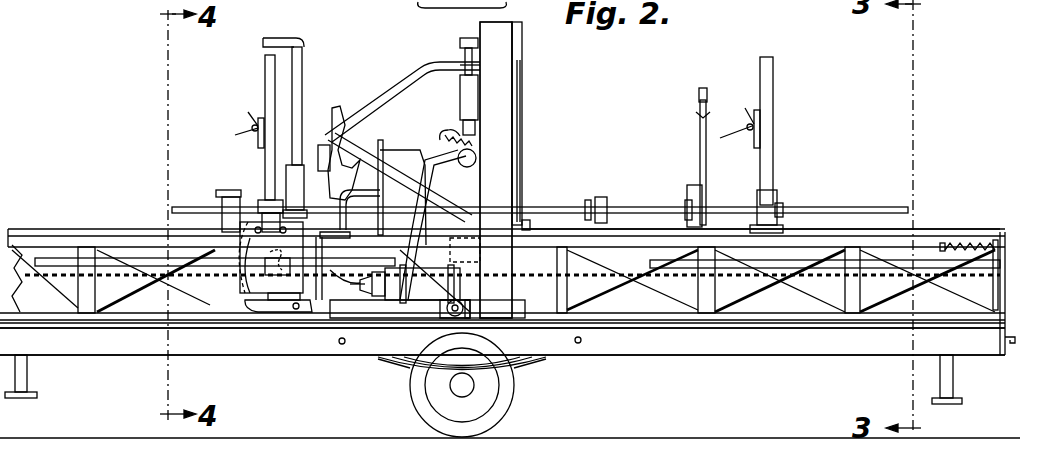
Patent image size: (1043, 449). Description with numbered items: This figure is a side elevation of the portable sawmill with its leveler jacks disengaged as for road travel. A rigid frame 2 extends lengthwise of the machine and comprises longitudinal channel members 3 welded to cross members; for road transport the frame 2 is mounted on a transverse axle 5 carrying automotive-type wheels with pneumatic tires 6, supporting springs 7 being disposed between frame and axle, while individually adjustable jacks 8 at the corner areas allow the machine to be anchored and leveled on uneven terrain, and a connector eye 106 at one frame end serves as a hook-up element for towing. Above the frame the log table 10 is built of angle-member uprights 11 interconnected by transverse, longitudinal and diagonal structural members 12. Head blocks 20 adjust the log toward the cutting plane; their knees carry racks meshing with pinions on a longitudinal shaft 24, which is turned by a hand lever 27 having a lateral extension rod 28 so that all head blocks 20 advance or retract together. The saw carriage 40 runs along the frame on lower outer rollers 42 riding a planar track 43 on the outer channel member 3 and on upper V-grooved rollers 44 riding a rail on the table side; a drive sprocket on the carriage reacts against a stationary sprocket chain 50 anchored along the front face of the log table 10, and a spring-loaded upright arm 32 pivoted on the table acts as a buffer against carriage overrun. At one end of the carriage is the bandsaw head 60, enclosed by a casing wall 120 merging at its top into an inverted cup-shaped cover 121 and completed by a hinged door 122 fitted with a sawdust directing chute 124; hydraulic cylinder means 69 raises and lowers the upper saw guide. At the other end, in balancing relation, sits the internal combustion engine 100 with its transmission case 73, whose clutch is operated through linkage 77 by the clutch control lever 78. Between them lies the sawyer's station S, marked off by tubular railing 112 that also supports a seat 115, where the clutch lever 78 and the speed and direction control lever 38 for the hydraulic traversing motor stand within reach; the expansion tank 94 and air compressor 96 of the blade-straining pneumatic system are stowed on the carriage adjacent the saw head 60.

The rigid frame 2 is at (754, 372).
The longitudinal channel member 3 is at (139, 341).
The transverse axle 5 is at (470, 383).
The pneumatic tire 6 is at (505, 411).
The supporting spring 7 is at (525, 370).
The jack 8 is at (27, 376).
The log table 10 is at (70, 217).
The angle-member upright 11 is at (78, 290).
The structural member 12 is at (136, 292).
The head block 20 is at (259, 157).
The longitudinal shaft 24 is at (630, 210).
The hand lever 27 is at (706, 154).
The lateral extension rod 28 is at (700, 104).
The upright arm 32 is at (995, 298).
The speed and direction control lever 38 is at (420, 162).
The saw carriage 40 is at (372, 312).
The lower outer roller 42 is at (300, 316).
The planar track 43 is at (673, 326).
The V-grooved roller 44 is at (278, 253).
The stationary sprocket chain 50 is at (210, 268).
The bandsaw head 60 is at (530, 49).
The hydraulic cylinder means 69 is at (460, 95).
The transmission case 73 is at (312, 300).
The linkage 77 is at (325, 300).
The clutch control lever 78 is at (446, 200).
The expansion tank 94 is at (418, 290).
The air compressor 96 is at (472, 156).
The internal combustion engine 100 is at (250, 282).
The connector eye 106 is at (1012, 345).
The tubular railing 112 is at (362, 110).
The seat 115 is at (376, 195).
The casing wall 120 is at (496, 177).
The inverted cup-shaped cover 121 is at (502, 22).
The door 122 is at (520, 92).
The sawdust directing chute 124 is at (530, 227).
The sawyer's station S is at (384, 130).